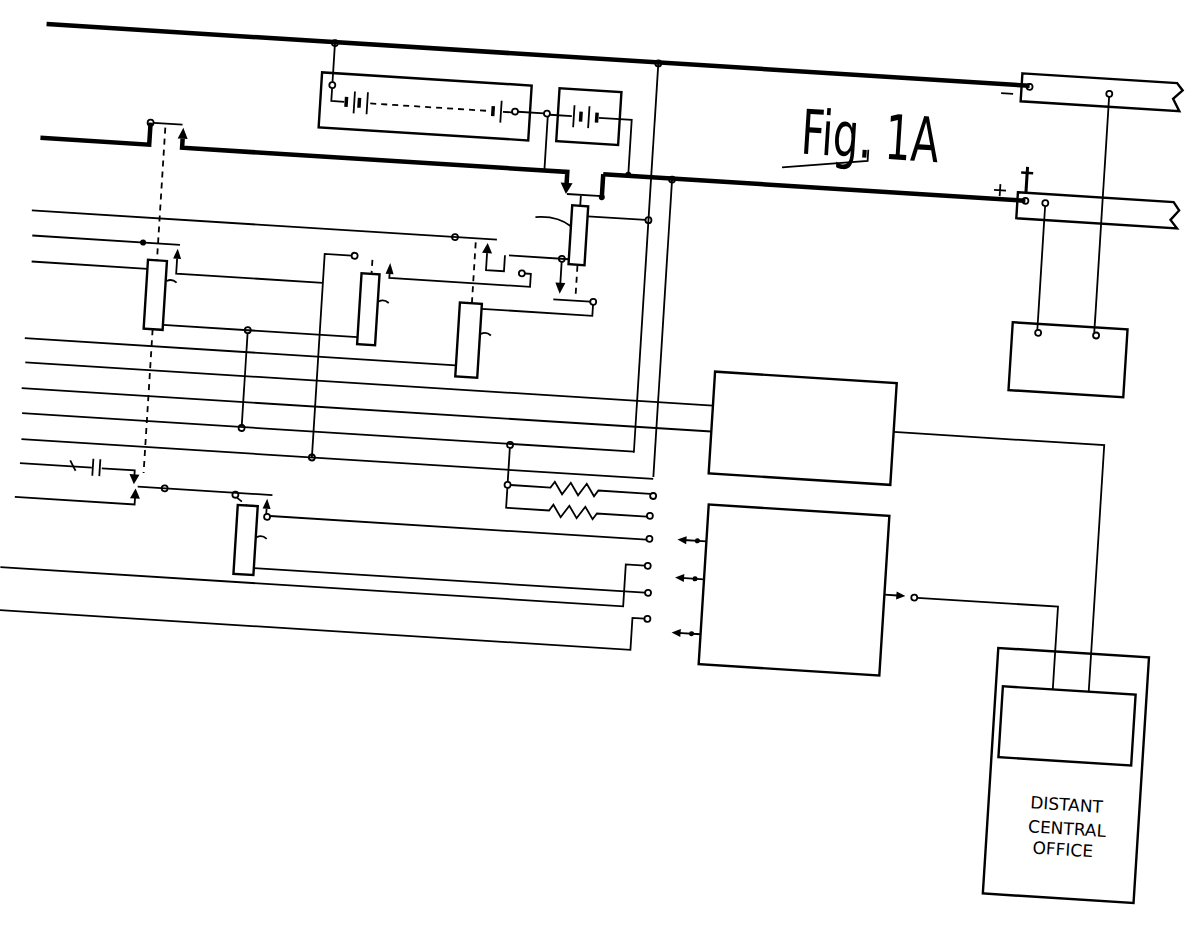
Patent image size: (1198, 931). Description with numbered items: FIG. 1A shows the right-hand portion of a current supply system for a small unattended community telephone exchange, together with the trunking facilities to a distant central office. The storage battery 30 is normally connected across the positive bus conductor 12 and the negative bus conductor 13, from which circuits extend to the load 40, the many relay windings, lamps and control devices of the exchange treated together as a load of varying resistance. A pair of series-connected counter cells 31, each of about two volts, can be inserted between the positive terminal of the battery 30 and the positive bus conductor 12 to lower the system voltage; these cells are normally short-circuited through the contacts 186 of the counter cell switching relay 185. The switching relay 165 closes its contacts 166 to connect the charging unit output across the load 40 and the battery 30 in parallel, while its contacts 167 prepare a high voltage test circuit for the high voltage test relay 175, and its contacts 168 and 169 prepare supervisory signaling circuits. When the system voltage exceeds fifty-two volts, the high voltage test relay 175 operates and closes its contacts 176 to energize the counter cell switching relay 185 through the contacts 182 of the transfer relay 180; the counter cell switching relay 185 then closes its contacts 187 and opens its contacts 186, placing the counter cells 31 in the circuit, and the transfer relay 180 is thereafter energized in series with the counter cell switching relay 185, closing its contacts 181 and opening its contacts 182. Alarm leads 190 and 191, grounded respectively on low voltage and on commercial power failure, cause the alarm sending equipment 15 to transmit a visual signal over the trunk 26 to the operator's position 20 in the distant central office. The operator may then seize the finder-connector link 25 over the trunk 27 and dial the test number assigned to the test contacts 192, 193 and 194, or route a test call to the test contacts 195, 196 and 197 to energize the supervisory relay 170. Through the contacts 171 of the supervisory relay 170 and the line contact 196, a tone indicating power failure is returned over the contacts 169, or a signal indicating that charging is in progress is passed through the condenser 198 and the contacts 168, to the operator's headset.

The positive bus conductor 12 is at (1083, 251).
The negative bus conductor 13 is at (1085, 204).
The alarm sending equipment 15 is at (922, 381).
The operator's position 20 is at (1046, 668).
The finder-connector link 25 is at (866, 620).
The alarm trunk 26 is at (1073, 559).
The trunk 27 is at (982, 631).
The storage battery 30 is at (460, 54).
The counter cells 31 is at (588, 51).
The load 40 is at (1087, 361).
The switching relay 165 is at (184, 288).
The contacts of switching relay 166 is at (194, 120).
The contacts of switching relay 167 is at (197, 239).
The contacts of switching relay 168 is at (175, 469).
The contacts 169 is at (175, 486).
The supervisory relay 170 is at (290, 540).
The contacts of supervisory relay 171 is at (305, 483).
The high voltage test relay 175 is at (397, 297).
The contacts of high voltage test relay 176 is at (420, 225).
The transfer relay 180 is at (501, 322).
The contacts of transfer relay 181 is at (490, 229).
The contacts of transfer relay 182 is at (522, 234).
The counter cell switching relay 185 is at (600, 205).
The contacts of counter cell switching relay 186 is at (573, 154).
The contacts of counter cell switching relay 187 is at (600, 246).
The alarm lead 190 is at (103, 386).
The alarm lead 191 is at (99, 358).
The private test contact 192 is at (686, 473).
The test contact 193 is at (325, 565).
The test contact 194 is at (669, 588).
The test contact 195 is at (687, 452).
The line contact 196 is at (620, 548).
The test contact 197 is at (451, 598).
The condenser 198 is at (123, 471).